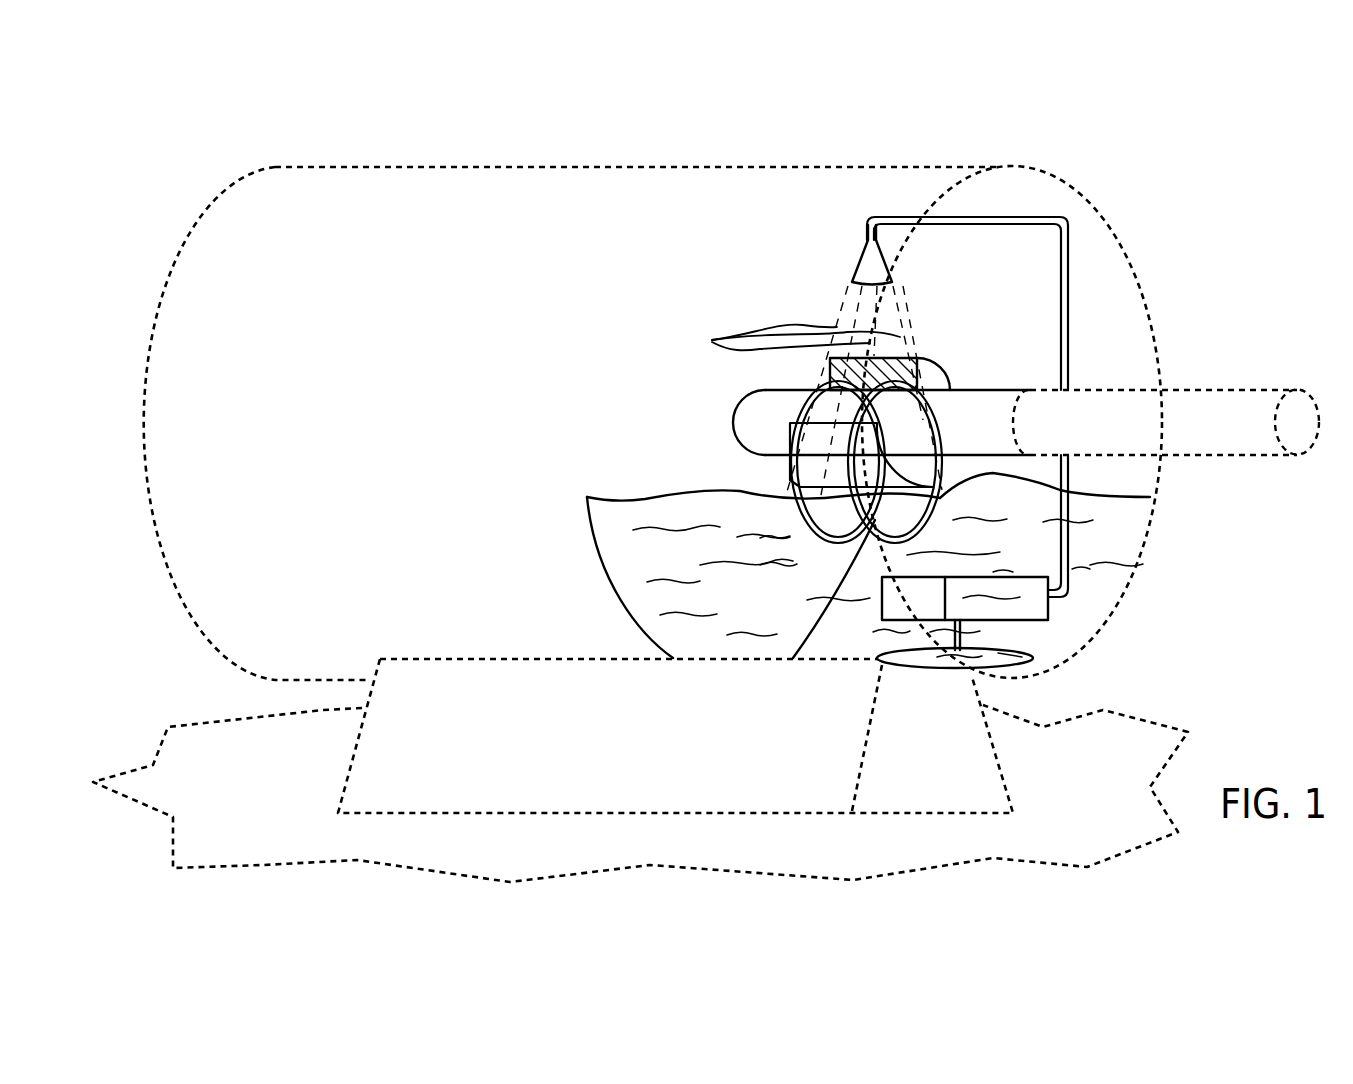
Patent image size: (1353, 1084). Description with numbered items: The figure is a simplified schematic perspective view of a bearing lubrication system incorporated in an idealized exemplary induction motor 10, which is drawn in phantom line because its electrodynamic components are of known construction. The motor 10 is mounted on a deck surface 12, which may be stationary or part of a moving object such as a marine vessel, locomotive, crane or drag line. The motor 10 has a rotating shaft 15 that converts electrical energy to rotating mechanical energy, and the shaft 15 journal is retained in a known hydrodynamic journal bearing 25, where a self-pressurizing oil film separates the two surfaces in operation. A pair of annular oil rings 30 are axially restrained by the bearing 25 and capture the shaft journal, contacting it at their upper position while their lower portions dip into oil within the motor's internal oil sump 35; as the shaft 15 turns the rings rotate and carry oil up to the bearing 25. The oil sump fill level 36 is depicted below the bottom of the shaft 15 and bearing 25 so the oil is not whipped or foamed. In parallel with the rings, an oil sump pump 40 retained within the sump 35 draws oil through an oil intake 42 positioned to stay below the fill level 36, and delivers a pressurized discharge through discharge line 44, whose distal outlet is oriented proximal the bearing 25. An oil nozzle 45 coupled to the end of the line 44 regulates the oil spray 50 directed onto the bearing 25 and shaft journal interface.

The induction motor 10 is at (178, 194).
The deck surface 12 is at (195, 742).
The rotating shaft 15 is at (1245, 400).
The hydrodynamic journal bearing 25 is at (933, 371).
The oil rings 30 is at (1042, 493).
The internal oil sump 35 is at (727, 608).
The oil sump fill level 36 is at (638, 497).
The oil sump pump 40 is at (1037, 600).
The oil intake 42 is at (1025, 652).
The discharge line 44 is at (960, 224).
The oil nozzle 45 is at (867, 263).
The oil spray 50 is at (790, 333).